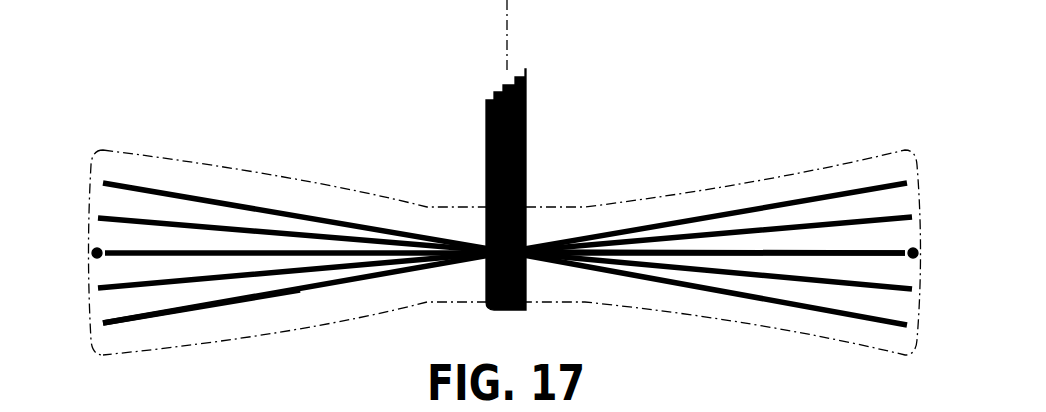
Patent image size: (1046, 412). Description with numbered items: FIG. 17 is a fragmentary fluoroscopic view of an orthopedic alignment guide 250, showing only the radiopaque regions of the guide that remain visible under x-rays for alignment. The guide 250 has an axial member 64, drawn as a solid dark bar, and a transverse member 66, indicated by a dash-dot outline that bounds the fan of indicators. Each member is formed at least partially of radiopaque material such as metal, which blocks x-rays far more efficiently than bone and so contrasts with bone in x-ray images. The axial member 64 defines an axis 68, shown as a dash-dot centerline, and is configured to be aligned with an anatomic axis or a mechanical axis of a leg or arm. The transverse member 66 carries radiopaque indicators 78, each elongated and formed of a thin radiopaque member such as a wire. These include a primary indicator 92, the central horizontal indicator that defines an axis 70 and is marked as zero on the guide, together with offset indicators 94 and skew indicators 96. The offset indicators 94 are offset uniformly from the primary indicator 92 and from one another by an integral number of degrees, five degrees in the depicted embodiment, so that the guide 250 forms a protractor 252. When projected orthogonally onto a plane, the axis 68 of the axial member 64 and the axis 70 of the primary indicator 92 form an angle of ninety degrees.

The axial member 64 is at (527, 143).
The transverse member 66 is at (283, 175).
The axis 68 is at (506, 38).
The axis 70 is at (890, 258).
The radiopaque indicators 78 is at (170, 185).
The primary indicator 92 is at (125, 262).
The offset indicators 94 is at (128, 185).
The skew indicators 96 is at (92, 253).
The orthopedic alignment guide 250 is at (652, 111).
The protractor 252 is at (297, 300).